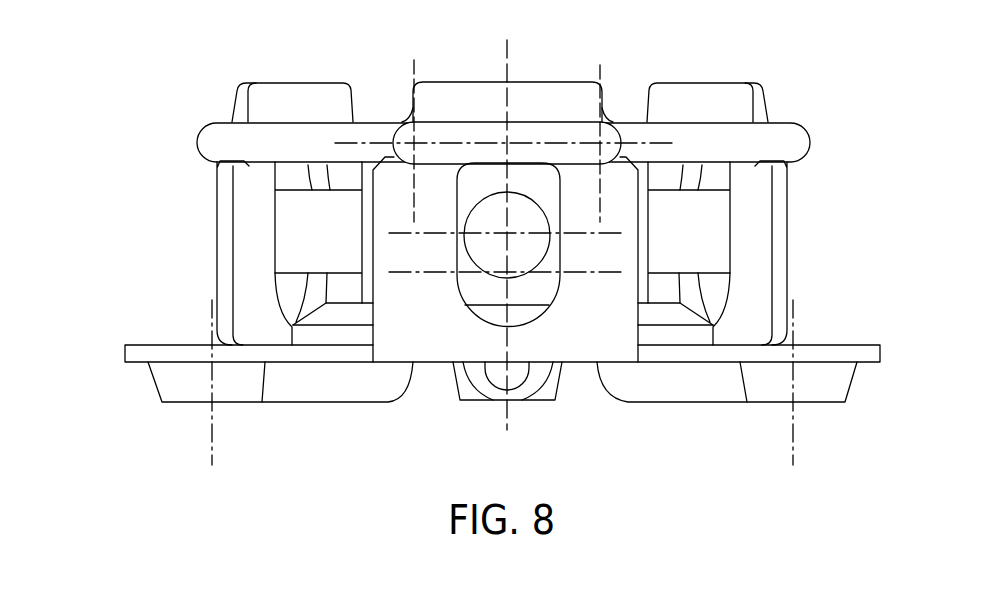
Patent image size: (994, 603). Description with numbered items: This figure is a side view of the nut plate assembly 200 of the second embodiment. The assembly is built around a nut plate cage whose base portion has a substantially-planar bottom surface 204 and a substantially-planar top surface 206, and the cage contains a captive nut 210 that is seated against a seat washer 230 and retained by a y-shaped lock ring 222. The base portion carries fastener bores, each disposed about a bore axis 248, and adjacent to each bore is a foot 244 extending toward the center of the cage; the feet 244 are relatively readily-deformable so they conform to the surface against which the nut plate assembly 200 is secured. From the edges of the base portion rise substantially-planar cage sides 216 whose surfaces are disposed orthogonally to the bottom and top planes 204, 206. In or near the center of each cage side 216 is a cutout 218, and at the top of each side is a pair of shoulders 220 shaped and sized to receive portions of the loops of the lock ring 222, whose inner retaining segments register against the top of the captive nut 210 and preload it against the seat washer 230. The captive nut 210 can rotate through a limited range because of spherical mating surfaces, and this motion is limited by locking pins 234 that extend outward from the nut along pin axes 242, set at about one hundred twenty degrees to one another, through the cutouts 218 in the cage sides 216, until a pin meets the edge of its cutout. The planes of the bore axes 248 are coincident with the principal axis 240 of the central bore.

The nut plate assembly 200 is at (130, 58).
The bottom surface 204 is at (133, 363).
The top surface 206 is at (127, 345).
The captive nut 210 is at (362, 204).
The cage sides 216 is at (217, 200).
The cutout 218 is at (816, 291).
The shoulders 220 is at (412, 93).
The lock ring 222 is at (217, 123).
The seat washer 230 is at (345, 333).
The locking pins 234 is at (287, 239).
The principal axis 240 is at (513, 43).
The pin axes 242 is at (508, 236).
The foot 244 is at (292, 402).
The bore axis 248 is at (210, 458).